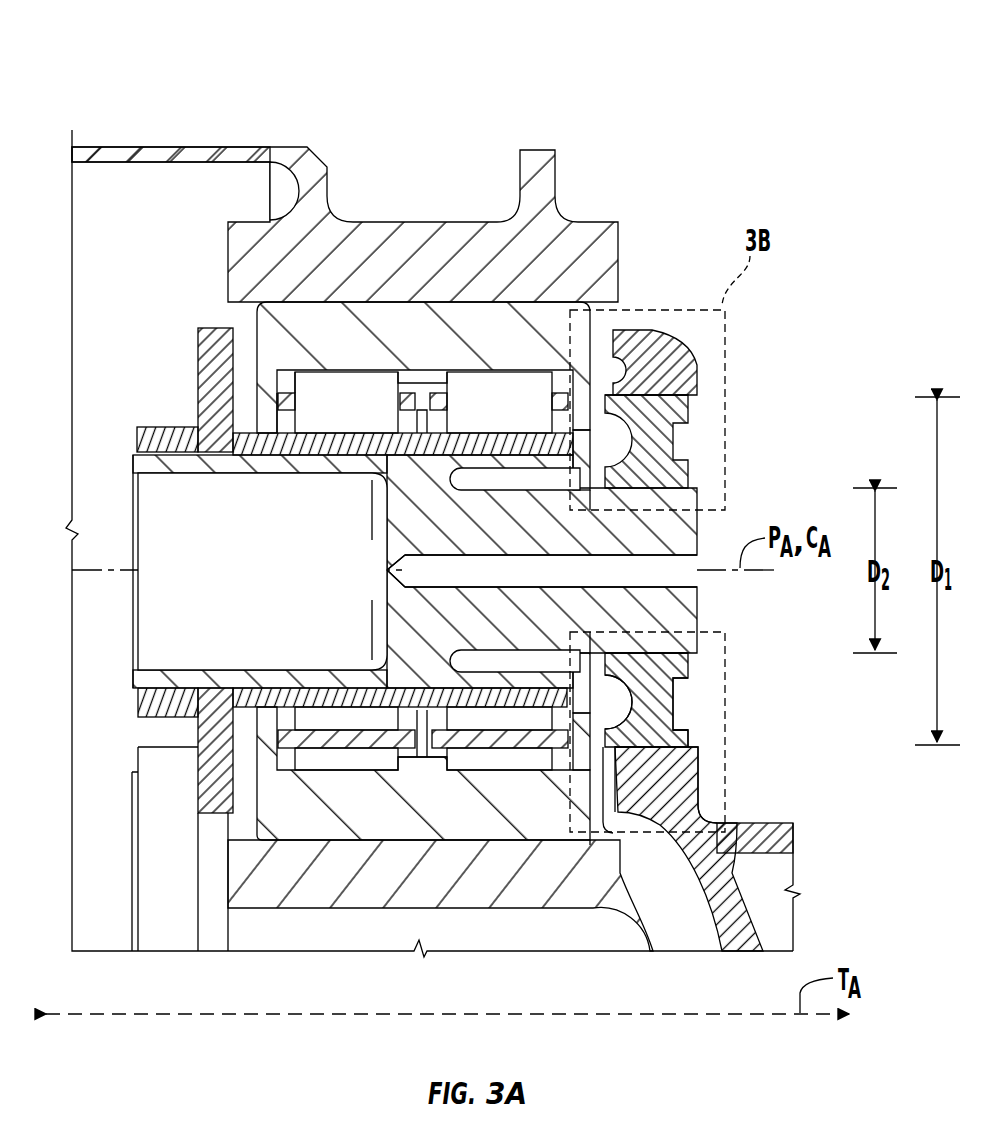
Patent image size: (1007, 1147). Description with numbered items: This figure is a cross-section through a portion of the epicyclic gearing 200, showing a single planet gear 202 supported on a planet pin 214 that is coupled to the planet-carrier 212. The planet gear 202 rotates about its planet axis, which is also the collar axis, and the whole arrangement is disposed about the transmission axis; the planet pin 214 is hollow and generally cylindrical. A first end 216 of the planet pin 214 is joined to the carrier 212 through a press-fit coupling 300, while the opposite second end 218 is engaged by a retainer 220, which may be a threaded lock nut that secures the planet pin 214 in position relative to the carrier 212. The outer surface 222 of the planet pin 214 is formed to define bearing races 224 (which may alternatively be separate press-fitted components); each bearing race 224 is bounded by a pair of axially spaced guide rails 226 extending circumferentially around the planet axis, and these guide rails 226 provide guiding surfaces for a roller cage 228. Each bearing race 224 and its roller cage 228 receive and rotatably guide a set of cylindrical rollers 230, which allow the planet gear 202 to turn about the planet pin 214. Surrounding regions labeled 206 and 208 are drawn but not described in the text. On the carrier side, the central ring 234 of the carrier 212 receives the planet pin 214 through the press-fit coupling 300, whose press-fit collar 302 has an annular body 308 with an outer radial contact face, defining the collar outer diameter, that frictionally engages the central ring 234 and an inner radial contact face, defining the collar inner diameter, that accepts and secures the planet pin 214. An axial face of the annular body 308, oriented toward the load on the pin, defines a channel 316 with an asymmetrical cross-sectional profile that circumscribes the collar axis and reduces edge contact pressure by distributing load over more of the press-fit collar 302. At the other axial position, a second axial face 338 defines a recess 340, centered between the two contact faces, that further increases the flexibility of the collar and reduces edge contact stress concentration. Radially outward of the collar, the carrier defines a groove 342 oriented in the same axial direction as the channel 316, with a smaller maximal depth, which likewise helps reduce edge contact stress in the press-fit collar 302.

The epicyclic gearing 200 is at (818, 80).
The planet gear 202 is at (267, 316).
The housing 206 is at (597, 243).
The housing portion 208 is at (348, 905).
The planet-carrier 212 is at (200, 351).
The planet pin 214 is at (697, 612).
The first end 216 is at (670, 540).
The second end 218 is at (170, 508).
The retainer 220 is at (162, 425).
The outer surface 222 is at (258, 772).
The bearing race 224 is at (306, 428).
The guide rail 226 is at (410, 428).
The roller cage 228 is at (277, 404).
The cylindrical roller 230 is at (389, 429).
The central ring 234 is at (702, 856).
The press-fit coupling 300 is at (733, 472).
The press-fit collar 302 is at (688, 470).
The annular body 308 is at (688, 410).
The channel 316 is at (625, 707).
The second axial face 338 is at (688, 733).
The recess 340 is at (686, 695).
The groove 342 is at (622, 773).